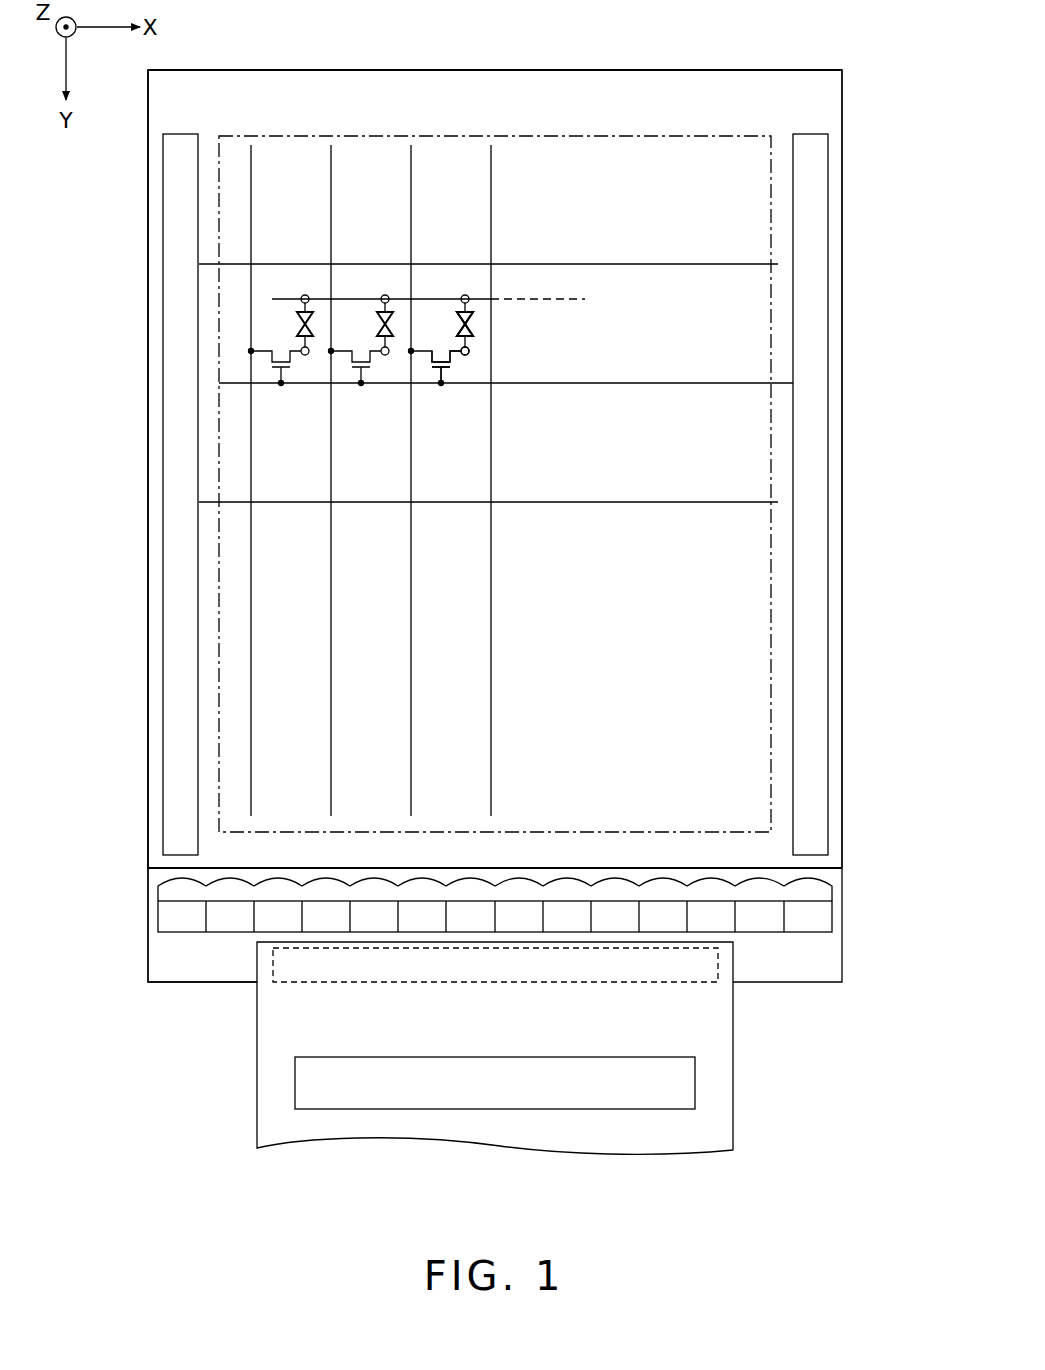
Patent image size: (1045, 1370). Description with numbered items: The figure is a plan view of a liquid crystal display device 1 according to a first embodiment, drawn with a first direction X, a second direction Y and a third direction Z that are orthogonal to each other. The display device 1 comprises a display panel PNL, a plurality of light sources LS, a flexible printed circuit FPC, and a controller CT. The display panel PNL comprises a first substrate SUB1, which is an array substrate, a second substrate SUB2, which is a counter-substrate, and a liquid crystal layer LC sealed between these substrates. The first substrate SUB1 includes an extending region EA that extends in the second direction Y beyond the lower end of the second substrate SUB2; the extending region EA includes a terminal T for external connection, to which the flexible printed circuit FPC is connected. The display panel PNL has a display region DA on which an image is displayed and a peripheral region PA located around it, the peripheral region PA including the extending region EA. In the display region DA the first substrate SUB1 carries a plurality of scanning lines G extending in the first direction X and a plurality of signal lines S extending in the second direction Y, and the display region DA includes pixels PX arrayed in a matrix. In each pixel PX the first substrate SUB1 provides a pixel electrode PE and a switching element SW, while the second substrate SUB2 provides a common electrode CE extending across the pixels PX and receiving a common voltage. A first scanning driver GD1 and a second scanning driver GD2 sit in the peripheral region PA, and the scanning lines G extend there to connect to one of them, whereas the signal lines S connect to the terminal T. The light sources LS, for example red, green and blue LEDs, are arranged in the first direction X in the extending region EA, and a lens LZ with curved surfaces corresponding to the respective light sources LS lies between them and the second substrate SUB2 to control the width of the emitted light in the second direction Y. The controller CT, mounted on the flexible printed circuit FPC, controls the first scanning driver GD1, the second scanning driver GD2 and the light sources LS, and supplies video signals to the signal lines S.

The display device 1 is at (776, 67).
The peripheral region PA is at (698, 104).
The display region DA is at (620, 167).
The first scanning driver GD1 is at (163, 298).
The second scanning driver GD2 is at (828, 318).
The signal lines S is at (251, 640).
The scanning lines G is at (633, 264).
The common electrode CE is at (472, 296).
The pixels PX is at (292, 284).
The liquid crystal layer LC is at (480, 322).
The pixel electrode PE is at (472, 356).
The switching element SW is at (455, 370).
The lens LZ is at (567, 878).
The light sources LS is at (472, 918).
The terminal T is at (368, 984).
The extending region EA is at (808, 962).
The flexible printed circuit FPC is at (735, 1110).
The controller CT is at (572, 1110).
The first substrate SUB1 is at (208, 982).
The second substrate SUB2 is at (193, 870).
The display panel PNL is at (78, 995).